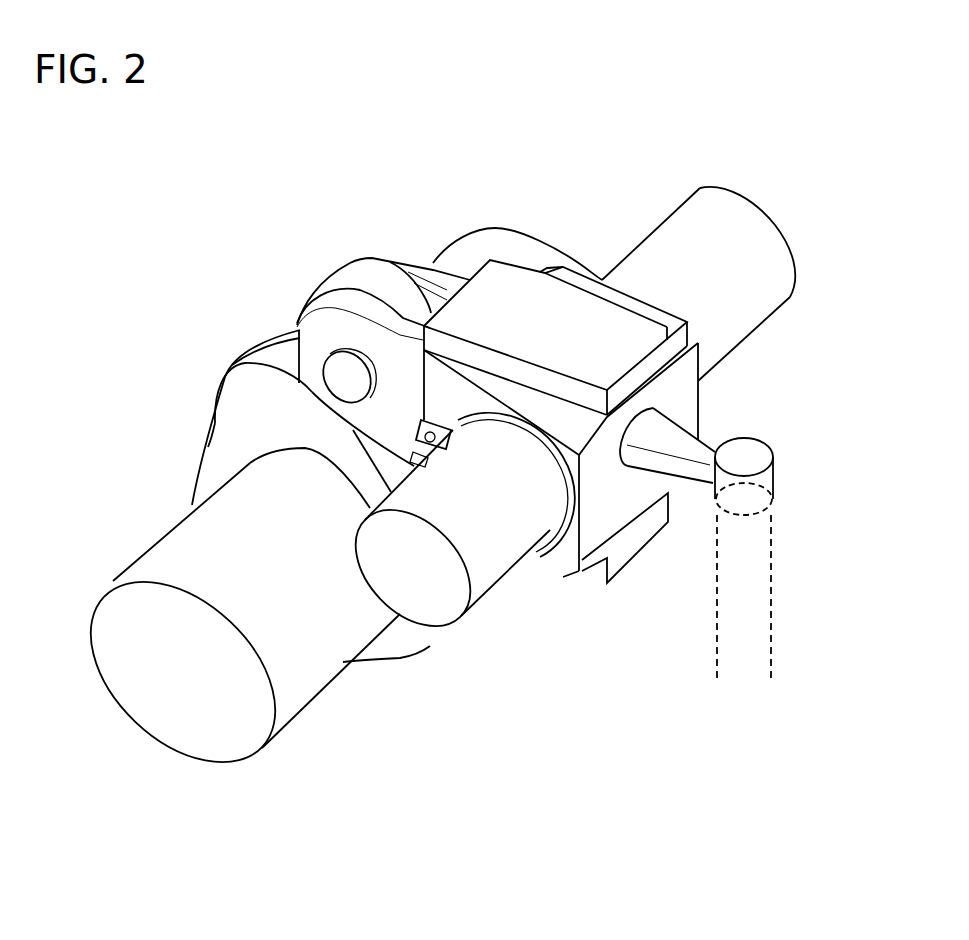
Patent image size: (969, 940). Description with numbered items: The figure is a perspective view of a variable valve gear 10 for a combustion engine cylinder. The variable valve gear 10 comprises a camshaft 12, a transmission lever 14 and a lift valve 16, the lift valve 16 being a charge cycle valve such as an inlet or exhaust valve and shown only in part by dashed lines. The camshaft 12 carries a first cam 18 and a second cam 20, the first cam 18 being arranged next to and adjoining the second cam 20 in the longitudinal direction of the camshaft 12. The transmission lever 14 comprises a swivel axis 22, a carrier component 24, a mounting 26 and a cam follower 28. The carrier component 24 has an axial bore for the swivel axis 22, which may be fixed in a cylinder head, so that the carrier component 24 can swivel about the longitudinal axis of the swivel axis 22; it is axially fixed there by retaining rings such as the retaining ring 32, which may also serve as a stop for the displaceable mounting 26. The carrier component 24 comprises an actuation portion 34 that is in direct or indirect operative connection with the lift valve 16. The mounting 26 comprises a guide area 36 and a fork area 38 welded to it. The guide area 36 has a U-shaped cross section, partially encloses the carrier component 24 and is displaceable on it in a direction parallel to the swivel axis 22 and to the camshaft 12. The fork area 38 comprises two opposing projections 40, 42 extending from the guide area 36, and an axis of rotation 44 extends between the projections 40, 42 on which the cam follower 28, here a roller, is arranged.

The variable valve gear 10 is at (430, 138).
The camshaft 12 is at (200, 722).
The transmission lever 14 is at (487, 662).
The lift valve 16 is at (727, 682).
The first cam 18 is at (227, 443).
The second cam 20 is at (232, 366).
The swivel axis 22 is at (438, 601).
The carrier component 24 is at (677, 400).
The mounting 26 is at (592, 305).
The cam follower 28 is at (358, 284).
The second retaining ring 32 is at (522, 423).
The actuation portion 34 is at (752, 458).
The guide area 36 is at (698, 342).
The fork area 38 is at (292, 238).
The first projection 40 is at (318, 337).
The second projection 42 is at (440, 280).
The axis of rotation 44 is at (345, 380).